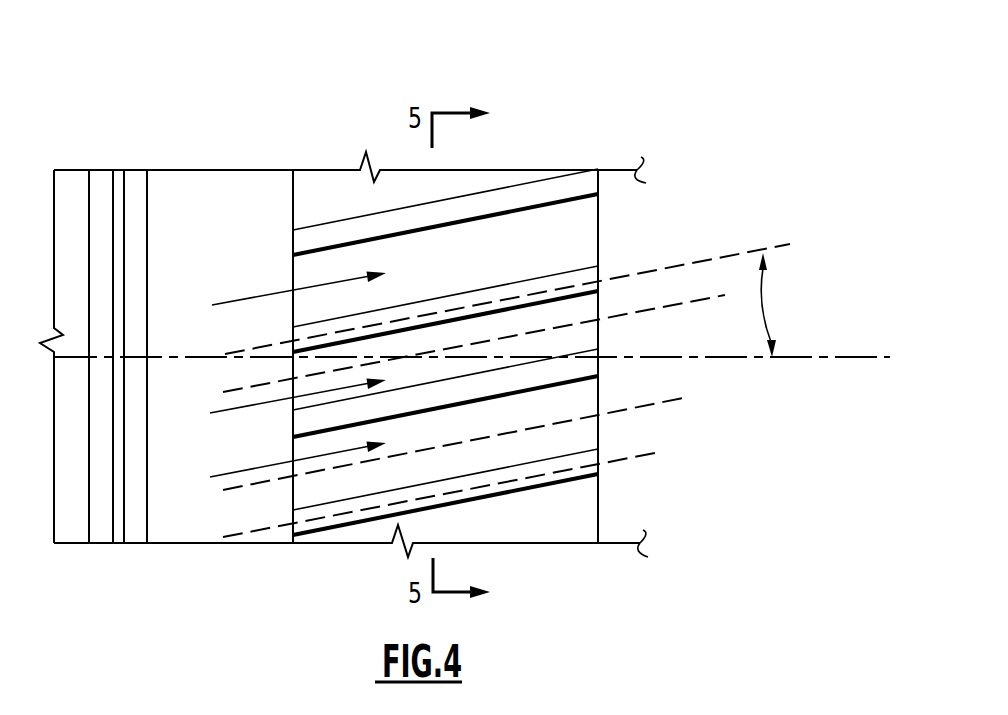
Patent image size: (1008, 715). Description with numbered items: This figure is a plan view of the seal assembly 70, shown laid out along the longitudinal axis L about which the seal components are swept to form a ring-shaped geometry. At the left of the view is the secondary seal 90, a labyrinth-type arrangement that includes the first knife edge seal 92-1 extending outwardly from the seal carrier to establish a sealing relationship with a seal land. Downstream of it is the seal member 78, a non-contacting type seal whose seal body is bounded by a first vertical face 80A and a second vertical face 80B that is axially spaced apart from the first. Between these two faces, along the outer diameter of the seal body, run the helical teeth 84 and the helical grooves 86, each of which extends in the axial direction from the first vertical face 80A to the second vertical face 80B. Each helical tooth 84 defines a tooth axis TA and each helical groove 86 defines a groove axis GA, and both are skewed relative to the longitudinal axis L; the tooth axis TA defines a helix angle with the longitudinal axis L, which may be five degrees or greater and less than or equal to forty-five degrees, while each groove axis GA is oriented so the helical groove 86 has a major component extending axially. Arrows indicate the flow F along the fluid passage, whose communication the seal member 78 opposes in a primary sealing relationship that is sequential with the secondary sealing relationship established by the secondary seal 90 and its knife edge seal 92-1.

The seal assembly 70 is at (133, 60).
The secondary seal 90 is at (138, 155).
The first knife edge seal 92-1 is at (148, 194).
The first vertical face 80A is at (293, 198).
The second vertical face 80B is at (598, 185).
The seal member 78 is at (473, 314).
The helical teeth 84 is at (479, 333).
The helical grooves 86 is at (587, 307).
The flow F is at (234, 298).
The tooth axis TA is at (728, 252).
The groove axis GA is at (640, 312).
The longitudinal axis L is at (833, 357).